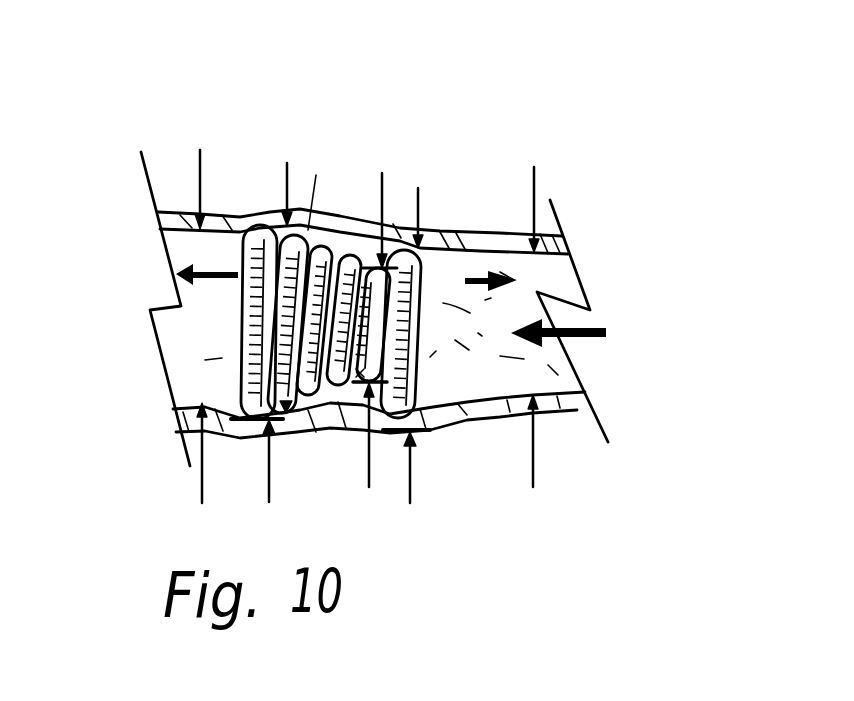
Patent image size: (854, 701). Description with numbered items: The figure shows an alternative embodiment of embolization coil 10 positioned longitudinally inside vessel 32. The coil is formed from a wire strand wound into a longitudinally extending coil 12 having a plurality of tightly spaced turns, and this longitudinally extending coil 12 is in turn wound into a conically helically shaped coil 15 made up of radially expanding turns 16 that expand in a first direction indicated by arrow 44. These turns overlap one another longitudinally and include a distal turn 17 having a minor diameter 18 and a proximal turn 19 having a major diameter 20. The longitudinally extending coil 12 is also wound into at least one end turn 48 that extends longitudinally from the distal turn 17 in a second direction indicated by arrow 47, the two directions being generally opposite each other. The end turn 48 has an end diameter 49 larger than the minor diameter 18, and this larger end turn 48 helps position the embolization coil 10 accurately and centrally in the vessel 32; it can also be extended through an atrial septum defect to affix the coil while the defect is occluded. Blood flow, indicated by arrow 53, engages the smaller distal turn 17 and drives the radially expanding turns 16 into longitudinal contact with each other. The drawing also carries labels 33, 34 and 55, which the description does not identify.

The embolization coil 10 is at (398, 83).
The longitudinally extending coil 12 is at (300, 418).
The conically helically shaped coil 15 is at (300, 250).
The radially expanding turns 16 is at (320, 227).
The distal turn 17 is at (350, 386).
The minor diameter 18 is at (383, 185).
The proximal turn 19 is at (245, 335).
The major diameter 20 is at (289, 175).
The vessel 32 is at (437, 417).
The proximal flow direction 33 is at (202, 173).
The distal flow direction 34 is at (548, 189).
The arrow 44 is at (231, 228).
The arrow 47 is at (470, 275).
The end turn 48 is at (419, 380).
The end diameter 49 is at (422, 200).
The arrow 53 is at (606, 328).
The vessel wall distal 55 is at (564, 392).